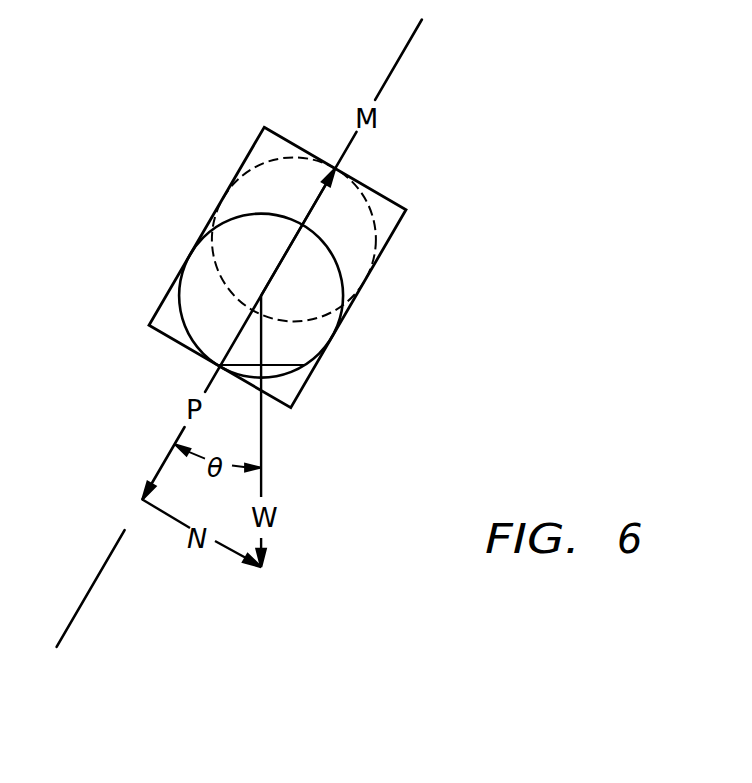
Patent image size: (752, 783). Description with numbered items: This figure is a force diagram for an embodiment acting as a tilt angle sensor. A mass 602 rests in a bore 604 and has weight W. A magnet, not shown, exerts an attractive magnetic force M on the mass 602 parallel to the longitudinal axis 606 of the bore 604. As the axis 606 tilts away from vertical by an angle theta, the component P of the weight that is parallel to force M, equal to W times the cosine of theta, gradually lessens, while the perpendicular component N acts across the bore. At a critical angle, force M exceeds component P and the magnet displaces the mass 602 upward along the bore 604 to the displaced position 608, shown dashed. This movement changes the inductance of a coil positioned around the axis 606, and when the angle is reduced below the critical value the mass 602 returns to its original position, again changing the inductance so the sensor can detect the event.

The mass 602 is at (312, 341).
The bore 604 is at (388, 212).
The longitudinal axis 606 is at (398, 60).
The position 608 is at (375, 235).